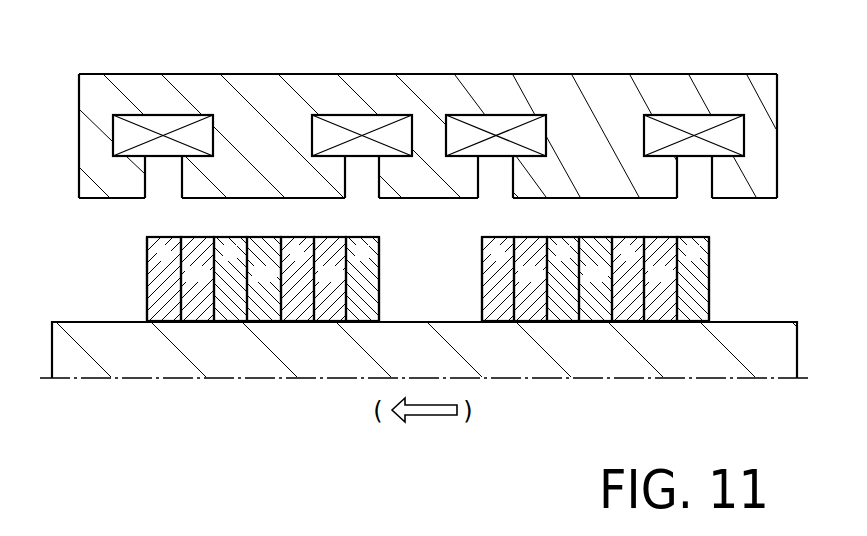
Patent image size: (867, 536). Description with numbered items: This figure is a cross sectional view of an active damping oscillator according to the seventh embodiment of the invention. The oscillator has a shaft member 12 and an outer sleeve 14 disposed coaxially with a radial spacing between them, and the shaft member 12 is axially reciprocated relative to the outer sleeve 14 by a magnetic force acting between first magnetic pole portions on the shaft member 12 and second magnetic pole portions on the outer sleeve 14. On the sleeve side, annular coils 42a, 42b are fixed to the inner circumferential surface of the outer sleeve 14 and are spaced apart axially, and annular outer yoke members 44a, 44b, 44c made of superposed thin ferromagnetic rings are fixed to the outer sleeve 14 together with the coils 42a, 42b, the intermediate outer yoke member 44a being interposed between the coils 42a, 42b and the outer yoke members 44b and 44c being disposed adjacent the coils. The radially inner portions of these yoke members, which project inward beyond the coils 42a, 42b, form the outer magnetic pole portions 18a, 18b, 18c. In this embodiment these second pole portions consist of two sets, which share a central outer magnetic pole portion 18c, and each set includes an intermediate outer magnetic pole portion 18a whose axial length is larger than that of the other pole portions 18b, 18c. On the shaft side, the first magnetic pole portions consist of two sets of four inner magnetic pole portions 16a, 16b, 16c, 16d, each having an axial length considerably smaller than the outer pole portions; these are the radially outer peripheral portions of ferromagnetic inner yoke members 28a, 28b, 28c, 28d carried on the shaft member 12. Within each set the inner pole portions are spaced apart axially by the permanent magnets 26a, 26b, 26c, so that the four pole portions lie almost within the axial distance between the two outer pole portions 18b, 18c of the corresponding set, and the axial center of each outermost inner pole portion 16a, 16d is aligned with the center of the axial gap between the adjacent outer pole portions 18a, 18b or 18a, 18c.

The shaft member 12 is at (85, 332).
The outer sleeve 14 is at (415, 80).
The inner magnetic pole portion 16a is at (152, 240).
The inner magnetic pole portion 16b is at (224, 239).
The inner magnetic pole portion 16c is at (287, 239).
The inner magnetic pole portion 16d is at (378, 238).
The intermediate outer magnetic pole portion 18a is at (233, 188).
The outer magnetic pole portion 18b is at (90, 192).
The central outer magnetic pole portion 18c is at (407, 193).
The permanent magnet 26a is at (196, 316).
The permanent magnet 26b is at (268, 316).
The permanent magnet 26c is at (330, 316).
The inner yoke member 28a is at (145, 306).
The inner yoke member 28b is at (229, 323).
The inner yoke member 28c is at (297, 323).
The inner yoke member 28d is at (381, 290).
The coil 42a is at (157, 122).
The coil 42b is at (348, 122).
The intermediate outer yoke member 44a is at (174, 189).
The outer yoke member 44b is at (74, 158).
The outer yoke member 44c is at (371, 171).